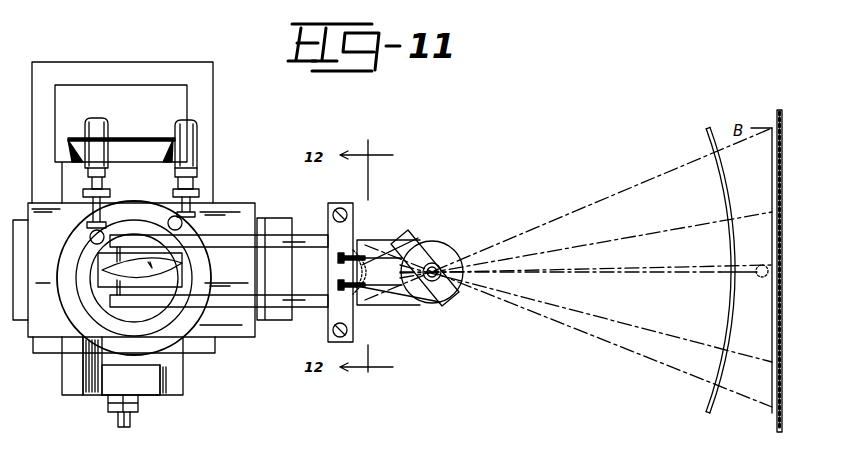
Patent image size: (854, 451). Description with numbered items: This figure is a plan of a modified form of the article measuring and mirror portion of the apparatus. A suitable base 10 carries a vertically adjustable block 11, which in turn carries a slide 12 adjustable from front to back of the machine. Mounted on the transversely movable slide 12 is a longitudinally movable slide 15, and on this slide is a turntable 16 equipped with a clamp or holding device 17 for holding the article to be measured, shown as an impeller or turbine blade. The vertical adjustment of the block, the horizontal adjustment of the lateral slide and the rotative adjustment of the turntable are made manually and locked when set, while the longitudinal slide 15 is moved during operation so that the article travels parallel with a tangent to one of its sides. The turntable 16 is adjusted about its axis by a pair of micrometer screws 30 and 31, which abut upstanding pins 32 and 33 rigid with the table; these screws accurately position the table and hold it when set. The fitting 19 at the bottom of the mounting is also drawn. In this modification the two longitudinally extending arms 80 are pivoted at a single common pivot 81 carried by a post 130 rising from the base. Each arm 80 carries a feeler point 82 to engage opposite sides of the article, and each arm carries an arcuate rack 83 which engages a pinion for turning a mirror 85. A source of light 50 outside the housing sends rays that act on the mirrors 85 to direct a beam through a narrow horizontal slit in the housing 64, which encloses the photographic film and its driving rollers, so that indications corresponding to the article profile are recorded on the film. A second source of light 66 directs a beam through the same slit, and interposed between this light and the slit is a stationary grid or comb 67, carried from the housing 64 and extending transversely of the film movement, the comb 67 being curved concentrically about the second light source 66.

The base 10 is at (213, 93).
The vertically adjustable block 11 is at (143, 152).
The slide 12 is at (108, 360).
The longitudinally movable slide 15 is at (52, 324).
The turntable 16 is at (157, 328).
The clamp or holding device 17 is at (173, 282).
The drain fitting 19 is at (122, 424).
The micrometer screw 30 is at (89, 126).
The micrometer screw 31 is at (196, 141).
The upstanding pin 32 is at (98, 233).
The upstanding pin 33 is at (182, 225).
The source of light 50 is at (760, 280).
The housing 64 is at (777, 113).
The second source of light 66 is at (413, 229).
The grid or comb 67 is at (707, 136).
The arm 80 is at (310, 240).
The pivot 81 is at (462, 287).
The feeler point 82 is at (117, 252).
The arcuate rack 83 is at (363, 253).
The mirror 85 is at (337, 283).
The post 130 is at (455, 251).